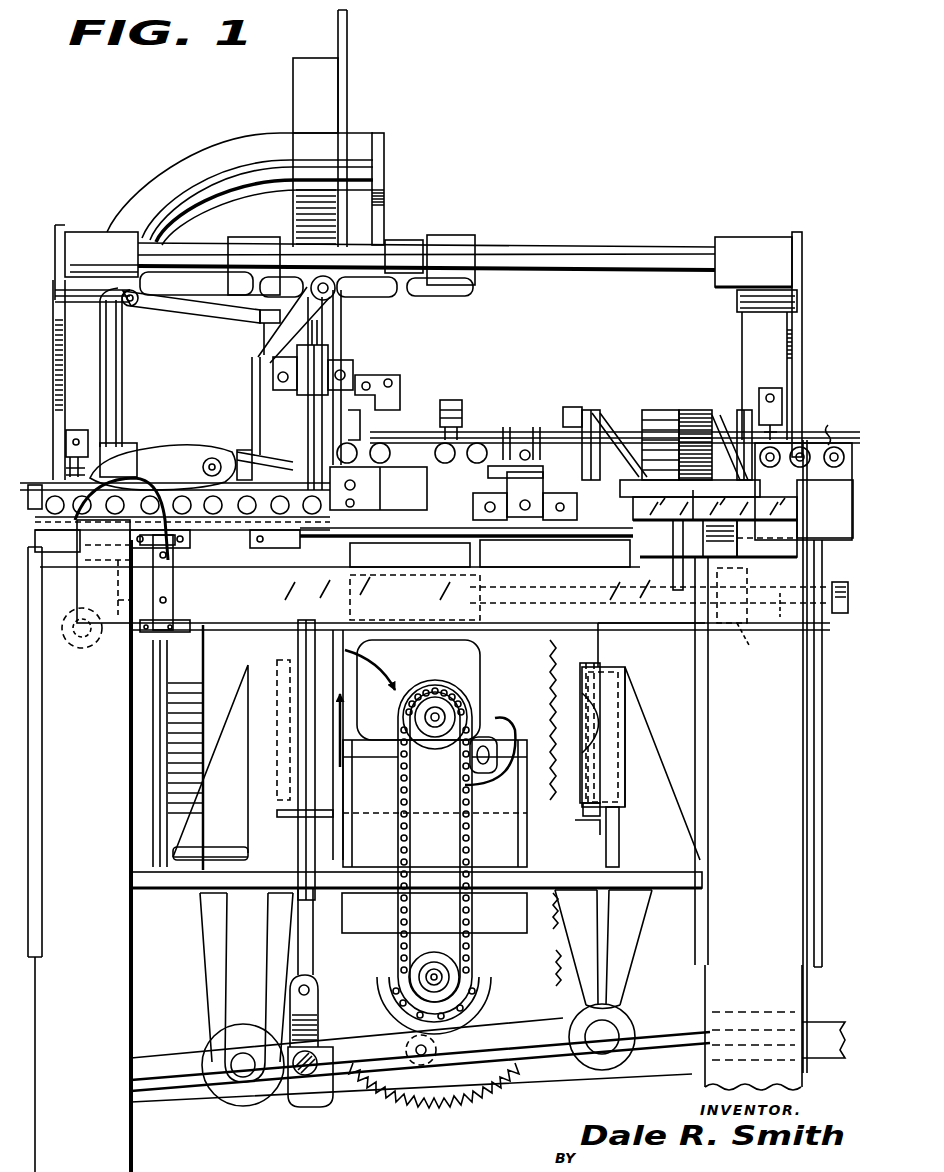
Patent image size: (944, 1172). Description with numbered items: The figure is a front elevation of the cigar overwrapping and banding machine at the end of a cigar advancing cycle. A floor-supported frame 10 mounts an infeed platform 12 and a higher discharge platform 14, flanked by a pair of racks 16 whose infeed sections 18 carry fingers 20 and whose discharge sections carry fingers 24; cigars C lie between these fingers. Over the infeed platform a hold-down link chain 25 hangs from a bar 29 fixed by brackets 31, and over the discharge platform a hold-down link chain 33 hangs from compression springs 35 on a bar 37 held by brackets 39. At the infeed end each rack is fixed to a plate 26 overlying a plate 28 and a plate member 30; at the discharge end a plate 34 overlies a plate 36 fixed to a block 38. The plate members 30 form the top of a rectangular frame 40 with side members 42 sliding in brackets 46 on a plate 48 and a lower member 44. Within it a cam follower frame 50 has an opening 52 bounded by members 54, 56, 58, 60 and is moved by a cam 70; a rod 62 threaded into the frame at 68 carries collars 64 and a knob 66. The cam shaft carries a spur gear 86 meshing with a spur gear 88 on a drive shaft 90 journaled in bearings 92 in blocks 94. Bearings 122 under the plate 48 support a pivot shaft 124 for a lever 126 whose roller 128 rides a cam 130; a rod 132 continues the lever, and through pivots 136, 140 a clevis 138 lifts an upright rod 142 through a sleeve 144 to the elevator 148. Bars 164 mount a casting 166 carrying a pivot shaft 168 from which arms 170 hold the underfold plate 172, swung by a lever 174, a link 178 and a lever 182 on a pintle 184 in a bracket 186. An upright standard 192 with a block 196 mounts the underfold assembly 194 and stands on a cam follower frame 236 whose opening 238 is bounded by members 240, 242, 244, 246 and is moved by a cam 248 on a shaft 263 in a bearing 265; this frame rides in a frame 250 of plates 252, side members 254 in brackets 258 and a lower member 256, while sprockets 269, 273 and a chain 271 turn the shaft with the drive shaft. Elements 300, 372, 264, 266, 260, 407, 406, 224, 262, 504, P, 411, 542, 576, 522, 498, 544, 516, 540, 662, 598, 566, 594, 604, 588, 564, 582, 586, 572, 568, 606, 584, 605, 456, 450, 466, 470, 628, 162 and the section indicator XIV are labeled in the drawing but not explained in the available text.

The post 300 is at (350, 33).
The block 372 is at (308, 72).
The curved guide 264 is at (203, 158).
The bar 266 is at (378, 136).
The bars 164 is at (550, 254).
The casting 166 is at (403, 262).
The pivot shaft 168 is at (323, 276).
The link 178 is at (124, 382).
The lever 174 is at (190, 318).
The arms 170 is at (252, 382).
The link bar 260 is at (280, 330).
The brackets 31 is at (76, 430).
The bar 29 is at (33, 485).
The cigars C is at (121, 513).
The infeed sections of the racks 18 is at (60, 552).
The fingers 20 is at (203, 468).
The pivot 407 is at (205, 462).
The lever 406 is at (228, 455).
The plate 26 is at (180, 545).
The hold-down link chain 25 is at (272, 545).
The upright standard 192 is at (308, 410).
The block 196 is at (328, 360).
The bracket 224 is at (400, 388).
The underfold assembly 194 is at (360, 362).
The link 262 is at (345, 360).
The block 504 is at (360, 490).
The underfold plate 172 is at (275, 458).
The pin P is at (556, 454).
The member 411 is at (325, 470).
The discharge platform 14 is at (440, 526).
The bracket 542 is at (488, 472).
The block 576 is at (525, 506).
The member 522 is at (528, 548).
The member 498 is at (406, 551).
The racks 16 is at (455, 545).
The hold-down link chain 33 is at (598, 451).
The bar 37 is at (440, 440).
The brackets 39 is at (766, 388).
The rod 544 is at (506, 462).
The rod 516 is at (503, 455).
The rod 540 is at (537, 462).
The compression springs 35 is at (832, 425).
The fingers 24 is at (795, 470).
The member 662 is at (845, 520).
The bracket 598 is at (578, 408).
The brace 566 is at (628, 440).
The motor 594 is at (660, 412).
The cylinder 604 is at (694, 412).
The brace 588 is at (728, 447).
The drive unit 564 is at (650, 368).
The base 582 is at (680, 492).
The base 586 is at (720, 495).
The base plate 572 is at (715, 508).
The plate 568 is at (636, 554).
The section line XIV is at (665, 550).
The block 606 is at (750, 538).
The upper member 240 is at (380, 610).
The member 584 is at (680, 575).
The member 605 is at (633, 614).
The collars 64 is at (749, 651).
The rod 62 is at (758, 756).
The knob 66 is at (840, 613).
The frame 10 is at (95, 1150).
The plate 28 is at (150, 582).
The infeed platform 12 is at (175, 588).
The elevator 148 is at (298, 590).
The plates 252 is at (300, 592).
The cam 248 is at (338, 625).
The plate 456 is at (183, 715).
The member 450 is at (165, 682).
The member 466 is at (170, 770).
The plate member 30 is at (223, 747).
The brackets 46 is at (265, 735).
The side members 42 is at (275, 665).
The spur gear 86 is at (565, 750).
The upright rod 142 is at (302, 833).
The sleeve 144 is at (270, 855).
The side members 254 is at (277, 808).
The brackets 258 is at (190, 850).
The frame 250 is at (596, 808).
The plate 48 is at (690, 880).
The bracket 186 is at (230, 956).
The pintle 184 is at (243, 1053).
The lever 182 is at (165, 1060).
The member 470 is at (175, 920).
The clevis 138 is at (305, 1008).
The pivot 140 is at (310, 989).
The pivot 136 is at (318, 1058).
The roller 128 is at (450, 1062).
The rod 132 is at (188, 1095).
The lever 126 is at (500, 1043).
The spur gear 88 is at (370, 1080).
The pivot shaft 124 is at (610, 1030).
The bearings 122 is at (630, 943).
The blocks 94 is at (520, 913).
The bearings 92 is at (500, 958).
The strip 628 is at (820, 1020).
The bearing 265 is at (418, 690).
The cam 70 is at (452, 713).
The shaft 263 is at (445, 716).
The side member 58 is at (539, 720).
The lower member 246 is at (435, 847).
The drive shaft 90 is at (430, 975).
The cam 130 is at (478, 1000).
The cam follower frame 236 is at (435, 803).
The rectangular opening 238 is at (405, 803).
The sprocket 269 is at (437, 815).
The side member 242 is at (335, 820).
The chain 271 is at (400, 903).
The sprocket 273 is at (440, 960).
The lower member 60 is at (490, 762).
The side member 244 is at (502, 838).
The lower member 44 is at (540, 828).
The lower member 256 is at (563, 866).
The rectangular frame 40 is at (640, 653).
The cam follower frame 50 is at (540, 655).
The block 38 is at (659, 648).
The plate 36 is at (696, 642).
The plate 34 is at (671, 703).
The threaded connection 68 is at (484, 583).
The upper member 54 is at (450, 640).
The rectangular opening 52 is at (500, 660).
The side member 56 is at (360, 660).
The member 162 is at (353, 576).